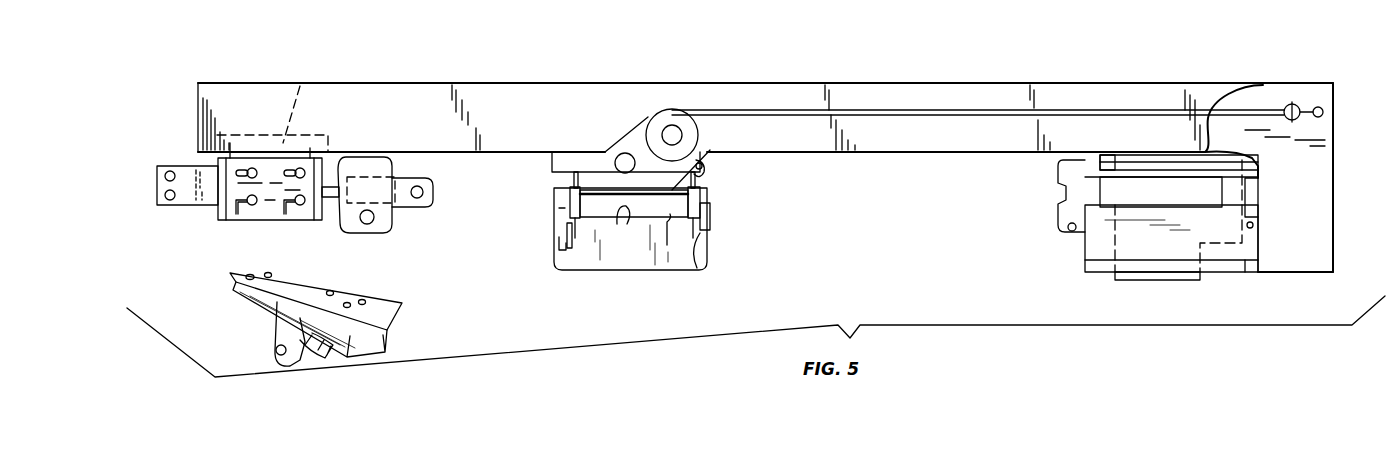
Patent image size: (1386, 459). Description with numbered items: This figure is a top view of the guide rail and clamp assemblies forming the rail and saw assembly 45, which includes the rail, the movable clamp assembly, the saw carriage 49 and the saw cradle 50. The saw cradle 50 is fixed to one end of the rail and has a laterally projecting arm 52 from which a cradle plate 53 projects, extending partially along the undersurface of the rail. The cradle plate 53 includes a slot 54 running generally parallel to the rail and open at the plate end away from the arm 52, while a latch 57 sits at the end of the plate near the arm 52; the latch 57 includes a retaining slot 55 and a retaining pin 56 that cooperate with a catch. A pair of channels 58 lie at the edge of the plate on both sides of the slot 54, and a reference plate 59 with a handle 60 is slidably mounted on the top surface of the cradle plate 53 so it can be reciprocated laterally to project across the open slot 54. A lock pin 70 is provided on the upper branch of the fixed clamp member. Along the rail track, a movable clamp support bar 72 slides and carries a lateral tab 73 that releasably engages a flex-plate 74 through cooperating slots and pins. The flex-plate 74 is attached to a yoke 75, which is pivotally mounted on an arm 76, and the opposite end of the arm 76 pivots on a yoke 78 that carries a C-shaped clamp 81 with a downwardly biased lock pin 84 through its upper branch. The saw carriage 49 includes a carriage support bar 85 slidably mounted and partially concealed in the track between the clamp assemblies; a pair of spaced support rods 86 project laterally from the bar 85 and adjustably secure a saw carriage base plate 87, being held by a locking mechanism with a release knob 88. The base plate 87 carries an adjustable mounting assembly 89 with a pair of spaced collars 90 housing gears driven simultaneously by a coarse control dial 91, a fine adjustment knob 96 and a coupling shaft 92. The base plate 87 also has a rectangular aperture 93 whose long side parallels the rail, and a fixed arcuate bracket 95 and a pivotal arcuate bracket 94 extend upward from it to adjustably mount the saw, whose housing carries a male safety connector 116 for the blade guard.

The rail and saw assembly 45 is at (823, 58).
The saw carriage 49 is at (633, 202).
The saw cradle 50 is at (997, 210).
The laterally projecting arm 52 is at (1320, 186).
The cradle plate 53 is at (1245, 272).
The slot 54 is at (1147, 207).
The retaining slot 55 is at (1259, 205).
The retaining pin 56 is at (1254, 228).
The latch 57 is at (1263, 188).
The channels 58 is at (1162, 170).
The reference plate 59 is at (1113, 150).
The handle 60 is at (1190, 282).
The lock pin 70 is at (1068, 227).
The movable clamp support bar 72 is at (301, 82).
The lateral tab 73 is at (258, 153).
The flex-plate 74 is at (203, 204).
The yoke 75 is at (287, 322).
The arm 76 is at (331, 200).
The yoke 78 is at (400, 178).
The C-shaped clamp 81 is at (390, 217).
The lock pin 84 is at (368, 225).
The carriage support bar 85 is at (573, 165).
The support rods 86 is at (572, 176).
The saw carriage base plate 87 is at (573, 262).
The release knob 88 is at (624, 153).
The adjustable mounting assembly 89 is at (565, 208).
The collars 90 is at (569, 194).
The coarse control dial 91 is at (712, 228).
The coupling shaft 92 is at (700, 150).
The rectangular aperture 93 is at (618, 226).
The pivotal arcuate bracket 94 is at (666, 240).
The fixed arcuate bracket 95 is at (561, 232).
The fine adjustment knob 96 is at (713, 242).
The male safety connector 116 is at (705, 172).